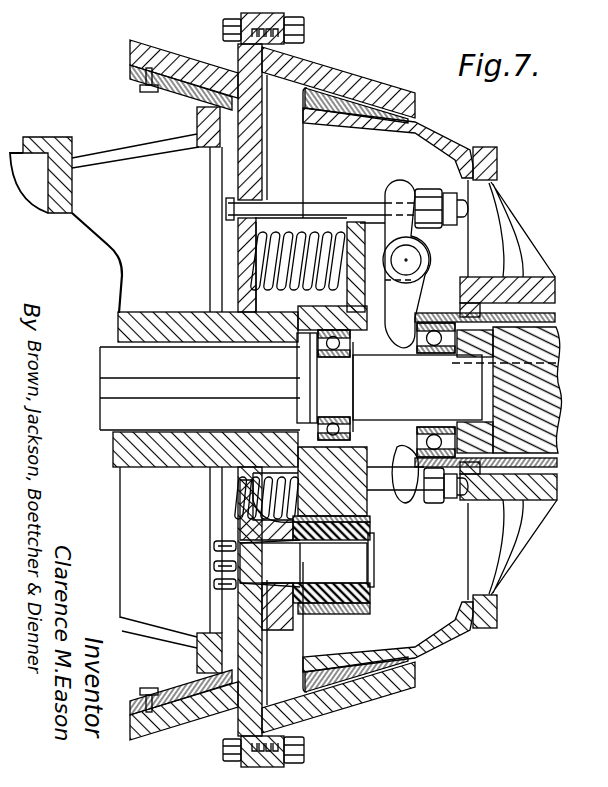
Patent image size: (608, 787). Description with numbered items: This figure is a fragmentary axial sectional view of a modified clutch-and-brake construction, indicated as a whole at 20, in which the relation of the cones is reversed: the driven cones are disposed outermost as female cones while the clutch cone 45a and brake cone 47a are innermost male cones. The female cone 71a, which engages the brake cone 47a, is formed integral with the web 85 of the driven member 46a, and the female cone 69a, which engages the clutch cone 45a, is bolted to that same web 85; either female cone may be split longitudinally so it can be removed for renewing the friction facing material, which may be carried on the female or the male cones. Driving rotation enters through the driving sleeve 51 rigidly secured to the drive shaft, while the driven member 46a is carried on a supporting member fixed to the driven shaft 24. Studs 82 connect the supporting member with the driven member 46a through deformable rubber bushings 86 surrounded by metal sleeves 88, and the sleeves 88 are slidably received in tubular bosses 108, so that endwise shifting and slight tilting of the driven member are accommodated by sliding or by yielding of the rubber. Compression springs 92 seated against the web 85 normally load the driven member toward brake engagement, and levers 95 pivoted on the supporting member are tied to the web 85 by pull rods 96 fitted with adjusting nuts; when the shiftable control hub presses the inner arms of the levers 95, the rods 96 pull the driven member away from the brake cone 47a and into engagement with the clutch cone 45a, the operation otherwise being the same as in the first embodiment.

The clutch assembly 20 is at (140, 29).
The female cone 71a is at (179, 62).
The brake cone 47a is at (198, 84).
The female cone 69a is at (362, 88).
The clutch cone 45a is at (356, 118).
The driven member 46a is at (257, 192).
The pull rods 96 is at (350, 202).
The web 85 is at (240, 262).
The compression springs 92 is at (265, 273).
The levers 95 is at (403, 333).
The driven shaft 24 is at (115, 362).
The driving sleeve 51 is at (555, 442).
The studs 82 is at (228, 592).
The metal sleeves 88 is at (266, 572).
The resilient bushings 86 is at (347, 607).
The tubular bosses 108 is at (370, 600).